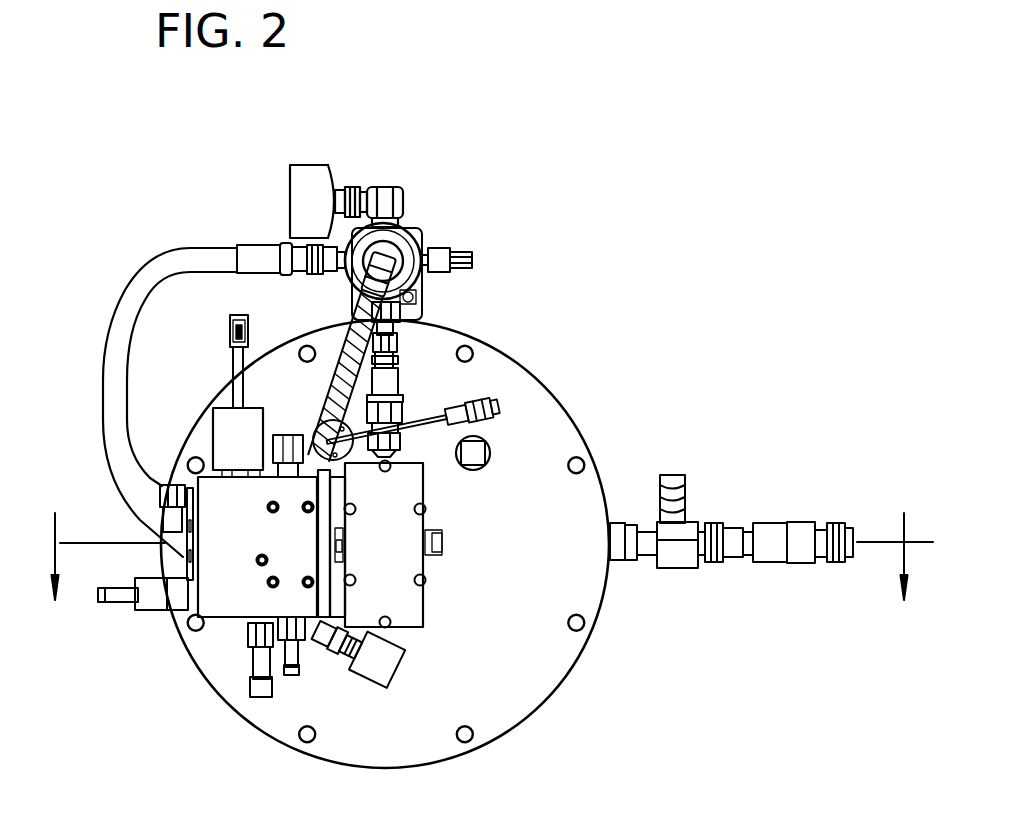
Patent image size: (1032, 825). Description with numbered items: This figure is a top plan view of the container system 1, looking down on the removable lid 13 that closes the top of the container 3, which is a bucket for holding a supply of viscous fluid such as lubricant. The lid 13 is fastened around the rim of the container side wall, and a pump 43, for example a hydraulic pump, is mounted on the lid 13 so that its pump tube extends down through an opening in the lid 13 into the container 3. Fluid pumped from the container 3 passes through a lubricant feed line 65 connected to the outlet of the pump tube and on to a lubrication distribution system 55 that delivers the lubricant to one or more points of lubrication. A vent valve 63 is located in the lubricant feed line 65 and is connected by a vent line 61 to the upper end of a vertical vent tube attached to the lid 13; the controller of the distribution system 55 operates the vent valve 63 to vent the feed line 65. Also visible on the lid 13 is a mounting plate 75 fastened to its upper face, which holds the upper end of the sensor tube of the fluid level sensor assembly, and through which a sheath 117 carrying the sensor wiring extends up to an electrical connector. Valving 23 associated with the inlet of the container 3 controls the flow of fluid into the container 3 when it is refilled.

The container system 1 is at (712, 198).
The container 3 is at (481, 556).
The removable lid 13 is at (553, 417).
The valving 23 is at (700, 508).
The pump 43 is at (452, 655).
The lubrication distribution system 55 is at (430, 200).
The vent line 61 is at (403, 395).
The vent valve 63 is at (417, 237).
The lubricant feed line 65 is at (398, 340).
The mounting plate 75 is at (300, 432).
The sheath 117 is at (240, 370).